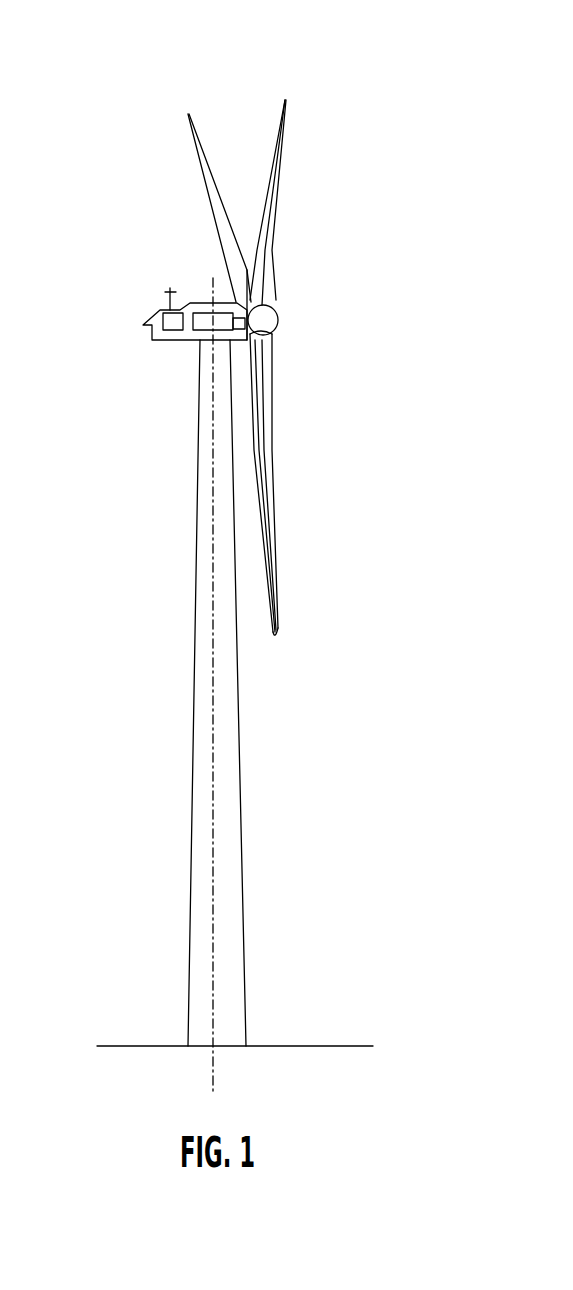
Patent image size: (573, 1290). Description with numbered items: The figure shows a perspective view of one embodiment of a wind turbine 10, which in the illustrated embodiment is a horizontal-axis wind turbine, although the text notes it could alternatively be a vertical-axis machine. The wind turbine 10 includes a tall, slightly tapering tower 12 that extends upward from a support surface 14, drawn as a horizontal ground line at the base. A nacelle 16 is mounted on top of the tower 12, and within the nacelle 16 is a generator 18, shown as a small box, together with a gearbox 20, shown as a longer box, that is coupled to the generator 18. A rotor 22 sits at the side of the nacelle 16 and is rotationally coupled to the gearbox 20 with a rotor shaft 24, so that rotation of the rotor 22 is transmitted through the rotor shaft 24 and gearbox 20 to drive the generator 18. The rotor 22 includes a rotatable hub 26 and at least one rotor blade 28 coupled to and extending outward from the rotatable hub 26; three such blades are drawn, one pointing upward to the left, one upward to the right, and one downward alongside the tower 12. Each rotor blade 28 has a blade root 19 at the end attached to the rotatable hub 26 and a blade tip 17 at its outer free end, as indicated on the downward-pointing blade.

The wind turbine 10 is at (405, 42).
The tower 12 is at (191, 787).
The support surface 14 is at (150, 1046).
The nacelle 16 is at (152, 341).
The blade tip 17 is at (281, 640).
The generator 18 is at (175, 323).
The blade root 19 is at (292, 371).
The gearbox 20 is at (200, 312).
The rotor 22 is at (246, 371).
The rotor shaft 24 is at (242, 327).
The rotatable hub 26 is at (280, 329).
The rotor blade 28 is at (204, 169).